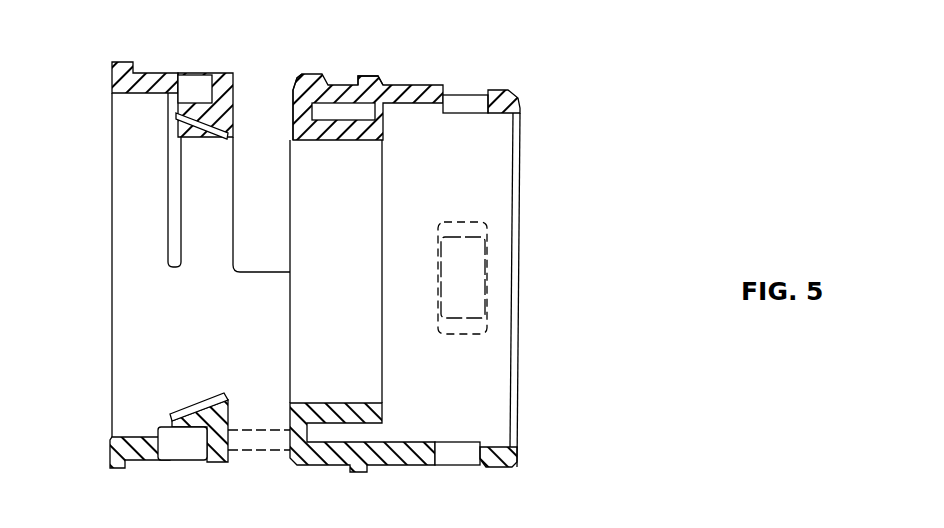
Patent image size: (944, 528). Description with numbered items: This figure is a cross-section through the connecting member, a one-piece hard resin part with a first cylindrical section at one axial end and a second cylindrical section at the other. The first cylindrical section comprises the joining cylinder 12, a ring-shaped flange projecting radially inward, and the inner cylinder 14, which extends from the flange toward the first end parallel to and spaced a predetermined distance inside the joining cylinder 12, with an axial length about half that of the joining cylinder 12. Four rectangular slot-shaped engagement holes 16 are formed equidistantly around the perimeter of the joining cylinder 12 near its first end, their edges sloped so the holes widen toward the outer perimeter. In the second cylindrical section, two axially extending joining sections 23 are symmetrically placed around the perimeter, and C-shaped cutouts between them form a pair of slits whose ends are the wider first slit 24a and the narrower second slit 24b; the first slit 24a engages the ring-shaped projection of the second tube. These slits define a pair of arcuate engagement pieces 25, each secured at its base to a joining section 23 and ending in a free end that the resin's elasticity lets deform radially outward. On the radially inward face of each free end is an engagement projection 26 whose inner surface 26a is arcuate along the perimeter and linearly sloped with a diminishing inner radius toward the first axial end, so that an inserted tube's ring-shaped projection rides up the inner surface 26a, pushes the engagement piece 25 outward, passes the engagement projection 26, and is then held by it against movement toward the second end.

The joining cylinder 12 is at (412, 85).
The inner cylinder 14 is at (368, 77).
The engagement holes 16 is at (484, 90).
The joining sections 23 is at (268, 445).
The first slit 24a is at (268, 143).
The second slit 24b is at (166, 210).
The engagement pieces 25 is at (233, 180).
The engagement projection 26 is at (232, 114).
The inner surface 26a is at (196, 133).